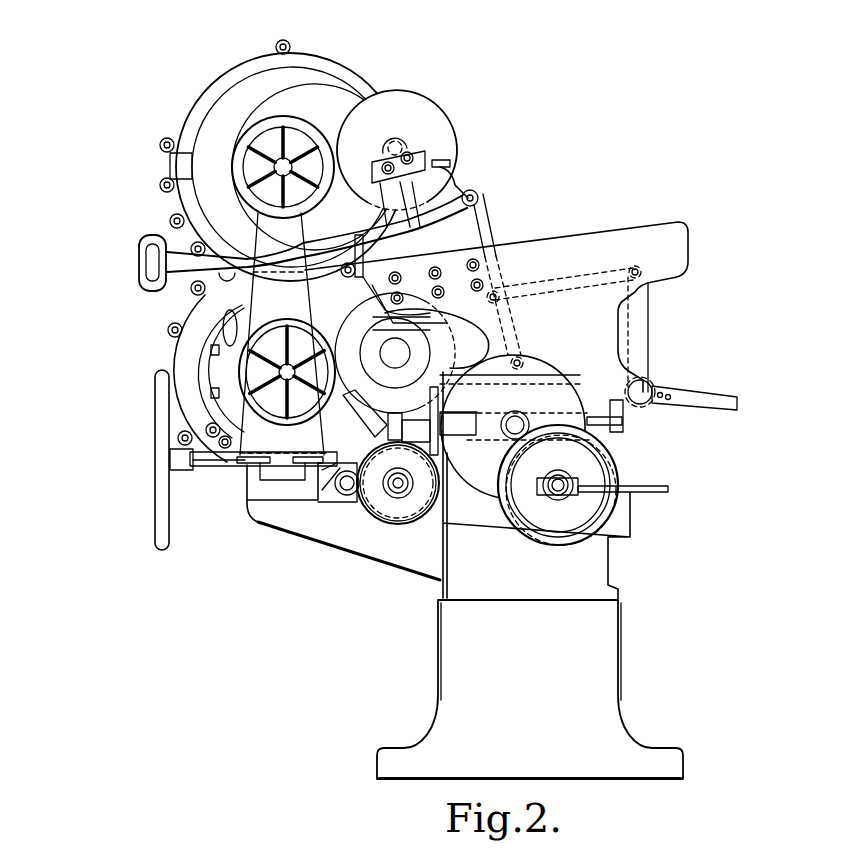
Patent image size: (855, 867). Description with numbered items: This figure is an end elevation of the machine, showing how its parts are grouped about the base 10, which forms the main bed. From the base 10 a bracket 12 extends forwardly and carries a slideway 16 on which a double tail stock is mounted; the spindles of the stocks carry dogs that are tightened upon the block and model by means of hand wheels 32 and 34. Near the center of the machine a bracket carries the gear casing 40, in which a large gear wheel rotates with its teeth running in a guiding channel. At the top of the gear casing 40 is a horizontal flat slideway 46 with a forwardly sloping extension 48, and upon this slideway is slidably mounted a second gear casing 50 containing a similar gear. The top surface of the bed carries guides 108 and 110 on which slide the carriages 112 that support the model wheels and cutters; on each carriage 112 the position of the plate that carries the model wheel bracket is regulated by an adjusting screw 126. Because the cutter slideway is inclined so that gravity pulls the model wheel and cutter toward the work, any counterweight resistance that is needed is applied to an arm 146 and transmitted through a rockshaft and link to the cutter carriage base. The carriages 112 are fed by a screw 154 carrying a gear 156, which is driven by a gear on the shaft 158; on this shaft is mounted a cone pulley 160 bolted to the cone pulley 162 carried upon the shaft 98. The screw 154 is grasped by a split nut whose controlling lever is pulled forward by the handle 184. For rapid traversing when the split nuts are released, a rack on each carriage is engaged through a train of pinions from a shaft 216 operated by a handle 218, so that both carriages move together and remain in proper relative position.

The base 10 is at (530, 689).
The bracket 12 is at (435, 406).
The slideway 16 is at (257, 458).
The hand wheel 32 is at (286, 425).
The hand wheel 34 is at (265, 122).
The gear casing 40 is at (192, 348).
The horizontal flat slideway 46 is at (325, 256).
The forwardly sloping extension 48 is at (203, 250).
The second gear casing 50 is at (333, 72).
The shaft 98 is at (395, 492).
The guide 108 is at (455, 424).
The guide 110 is at (607, 410).
The carriage 112 is at (496, 307).
The adjusting screw 126 is at (447, 160).
The arm 146 is at (703, 403).
The screw 154 is at (522, 420).
The gear 156 is at (483, 493).
The shaft 158 is at (545, 500).
The cone pulley 160 is at (543, 537).
The cone pulley 162 is at (395, 523).
The handle 184 is at (142, 263).
The shaft 216 is at (217, 460).
The handle 218 is at (155, 523).